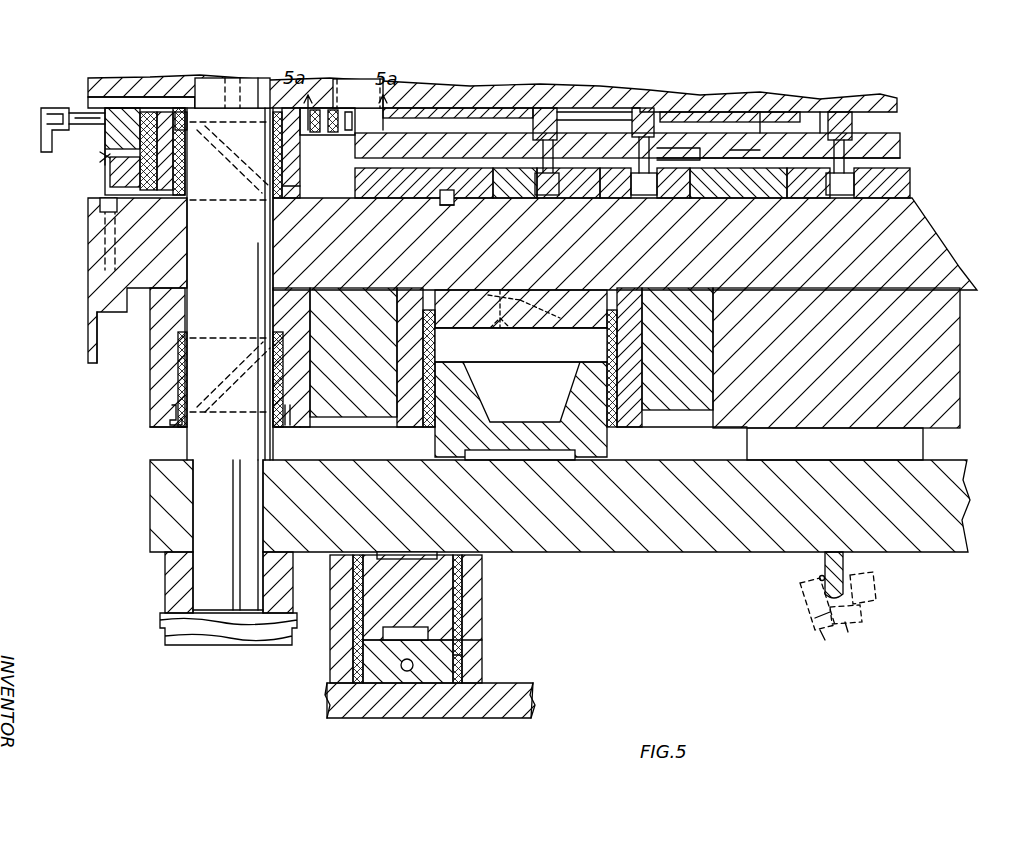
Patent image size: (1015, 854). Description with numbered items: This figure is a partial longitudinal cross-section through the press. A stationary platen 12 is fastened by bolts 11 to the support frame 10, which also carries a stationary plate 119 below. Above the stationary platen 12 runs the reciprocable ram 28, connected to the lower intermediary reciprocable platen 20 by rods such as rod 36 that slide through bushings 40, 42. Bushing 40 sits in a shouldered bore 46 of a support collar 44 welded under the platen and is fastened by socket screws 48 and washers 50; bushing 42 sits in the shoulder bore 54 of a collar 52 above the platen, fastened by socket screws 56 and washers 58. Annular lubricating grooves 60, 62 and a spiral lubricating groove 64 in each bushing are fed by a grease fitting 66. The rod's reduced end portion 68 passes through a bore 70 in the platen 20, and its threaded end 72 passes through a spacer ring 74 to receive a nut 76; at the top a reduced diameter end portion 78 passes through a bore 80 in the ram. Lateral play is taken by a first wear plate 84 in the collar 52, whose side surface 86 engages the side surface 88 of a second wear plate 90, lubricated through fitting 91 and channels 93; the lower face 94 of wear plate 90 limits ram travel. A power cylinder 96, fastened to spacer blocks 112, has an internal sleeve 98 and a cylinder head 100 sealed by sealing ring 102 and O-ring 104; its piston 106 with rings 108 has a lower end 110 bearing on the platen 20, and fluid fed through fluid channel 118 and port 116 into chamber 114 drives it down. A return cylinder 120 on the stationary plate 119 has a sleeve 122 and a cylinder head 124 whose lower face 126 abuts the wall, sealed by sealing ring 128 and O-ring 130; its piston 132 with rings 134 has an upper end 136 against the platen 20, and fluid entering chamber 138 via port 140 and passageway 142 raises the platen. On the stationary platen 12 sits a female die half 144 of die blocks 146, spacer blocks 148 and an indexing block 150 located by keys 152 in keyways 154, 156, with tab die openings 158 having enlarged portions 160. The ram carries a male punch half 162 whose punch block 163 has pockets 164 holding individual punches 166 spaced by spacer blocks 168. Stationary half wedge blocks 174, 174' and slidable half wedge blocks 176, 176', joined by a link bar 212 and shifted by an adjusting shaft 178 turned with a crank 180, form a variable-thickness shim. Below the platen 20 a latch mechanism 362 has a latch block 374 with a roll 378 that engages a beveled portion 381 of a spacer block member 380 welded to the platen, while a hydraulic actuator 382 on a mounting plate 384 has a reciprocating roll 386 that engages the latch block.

The support frame 10 is at (92, 352).
The bolts 11 is at (100, 238).
The stationary platen 12 is at (90, 260).
The intermediary reciprocable platen 20 is at (598, 555).
The reciprocable ram 28 is at (98, 84).
The rod 36 is at (187, 440).
The bushing 40 is at (185, 380).
The bushing 42 is at (189, 212).
The support collar 44 is at (160, 356).
The shouldered bore 46 is at (176, 382).
The socket screws 48 is at (280, 427).
The washers 50 is at (300, 427).
The collar 52 is at (292, 160).
The shoulder bore 54 is at (292, 184).
The socket screws 56 is at (181, 112).
The washers 58 is at (190, 128).
The annular lubricating groove 60 is at (258, 140).
The annular lubricating groove 62 is at (252, 200).
The spiral lubricating groove 64 is at (238, 164).
The grease fitting 66 is at (320, 112).
The reduced end portion 68 is at (258, 515).
The bore 70 is at (262, 540).
The threaded end 72 is at (210, 618).
The spacer ring 74 is at (165, 584).
The nut 76 is at (166, 628).
The reduced diameter end portion 78 is at (246, 90).
The bore 80 is at (260, 95).
The first wear plate 84 is at (180, 185).
The side surface 86 is at (166, 158).
The side surface 88 is at (150, 150).
The second wear plate 90 is at (150, 120).
The fitting 91 is at (102, 160).
The channels 93 is at (118, 178).
The lower face 94 is at (112, 204).
The power cylinder 96 is at (410, 427).
The internal sleeve 98 is at (428, 430).
The cylinder head 100 is at (476, 330).
The sealing ring 102 is at (446, 326).
The O-ring 104 is at (455, 330).
The piston 106 is at (630, 440).
The rings 108 is at (465, 380).
The lower end 110 is at (470, 462).
The spacer blocks 112 is at (358, 418).
The chamber 114 is at (608, 330).
The port 116 is at (520, 325).
The fluid channel 118 is at (510, 292).
The stationary plate 119 is at (330, 700).
The return cylinder 120 is at (482, 620).
The sleeve 122 is at (462, 597).
The cylinder head 124 is at (366, 690).
The lower face 126 is at (432, 690).
The sealing ring 128 is at (470, 664).
The O-ring 130 is at (463, 650).
The piston 132 is at (445, 580).
The rings 134 is at (355, 624).
The upper end 136 is at (442, 556).
The chamber 138 is at (350, 650).
The port 140 is at (412, 662).
The passageway 142 is at (414, 668).
The female die half 144 is at (620, 200).
The die blocks 146 is at (514, 200).
The spacer blocks 148 is at (762, 198).
The indexing block 150 is at (420, 200).
The keys 152 is at (455, 203).
The keyway 154 is at (446, 207).
The keyway 156 is at (453, 180).
The tab die openings 158 is at (560, 175).
The enlarged portions 160 is at (552, 200).
The male punch half 162 is at (758, 178).
The punch block 163 is at (748, 162).
The pockets 164 is at (662, 166).
The individual punches 166 is at (652, 156).
The spacer blocks 168 is at (645, 108).
The stationary half wedge block 174 is at (458, 89).
The stationary half wedge block 174' is at (730, 90).
The slidable half wedge block 176 is at (518, 103).
The slidable half wedge block 176' is at (811, 130).
The adjusting shaft 178 is at (82, 126).
The crank 180 is at (45, 150).
The link bar 212 is at (600, 108).
The latch mechanism 362 is at (811, 631).
The latch block 374 is at (822, 641).
The roll 378 is at (820, 577).
The spacer block member 380 is at (846, 572).
The beveled portion 381 is at (812, 603).
The hydraulic actuator 382 is at (877, 593).
The mounting plate 384 is at (868, 612).
The reciprocating roll 386 is at (848, 632).